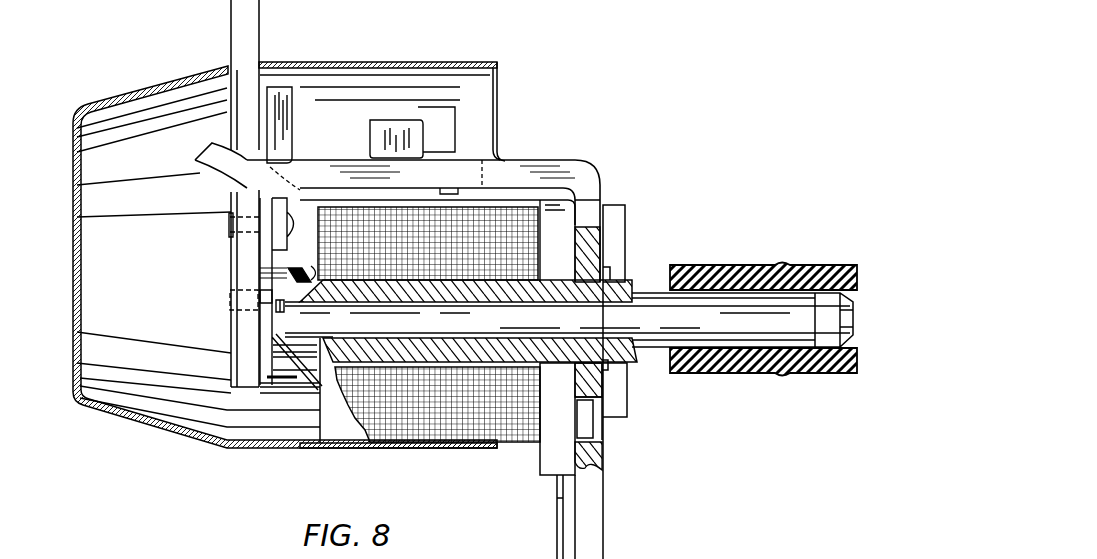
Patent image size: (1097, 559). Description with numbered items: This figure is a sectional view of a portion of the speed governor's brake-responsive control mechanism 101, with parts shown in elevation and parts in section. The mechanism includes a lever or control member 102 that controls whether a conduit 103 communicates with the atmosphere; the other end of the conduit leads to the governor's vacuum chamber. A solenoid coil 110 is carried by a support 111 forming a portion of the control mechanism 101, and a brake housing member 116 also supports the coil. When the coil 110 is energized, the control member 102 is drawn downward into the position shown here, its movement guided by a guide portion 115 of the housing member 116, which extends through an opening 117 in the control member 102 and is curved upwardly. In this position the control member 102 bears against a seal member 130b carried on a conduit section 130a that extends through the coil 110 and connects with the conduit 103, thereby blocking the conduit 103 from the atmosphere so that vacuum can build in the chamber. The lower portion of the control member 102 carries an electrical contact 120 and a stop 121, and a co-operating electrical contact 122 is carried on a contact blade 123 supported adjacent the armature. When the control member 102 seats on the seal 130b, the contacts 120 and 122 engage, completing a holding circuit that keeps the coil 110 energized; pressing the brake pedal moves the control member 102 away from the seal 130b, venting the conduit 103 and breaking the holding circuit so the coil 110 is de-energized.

The control mechanism 101 is at (423, 457).
The lever member 102 is at (253, 22).
The conduit 103 is at (713, 263).
The solenoid coil 110 is at (520, 233).
The support 111 is at (290, 448).
The guide portion 115 is at (208, 172).
The brake housing member 116 is at (510, 173).
The opening 117 is at (245, 152).
The electrical contact 120 is at (250, 298).
The stop 121 is at (267, 202).
The co-operating electrical contact 122 is at (280, 307).
The contact blade 123 is at (272, 368).
The conduit section 130a is at (633, 353).
The seal member 130b is at (293, 272).